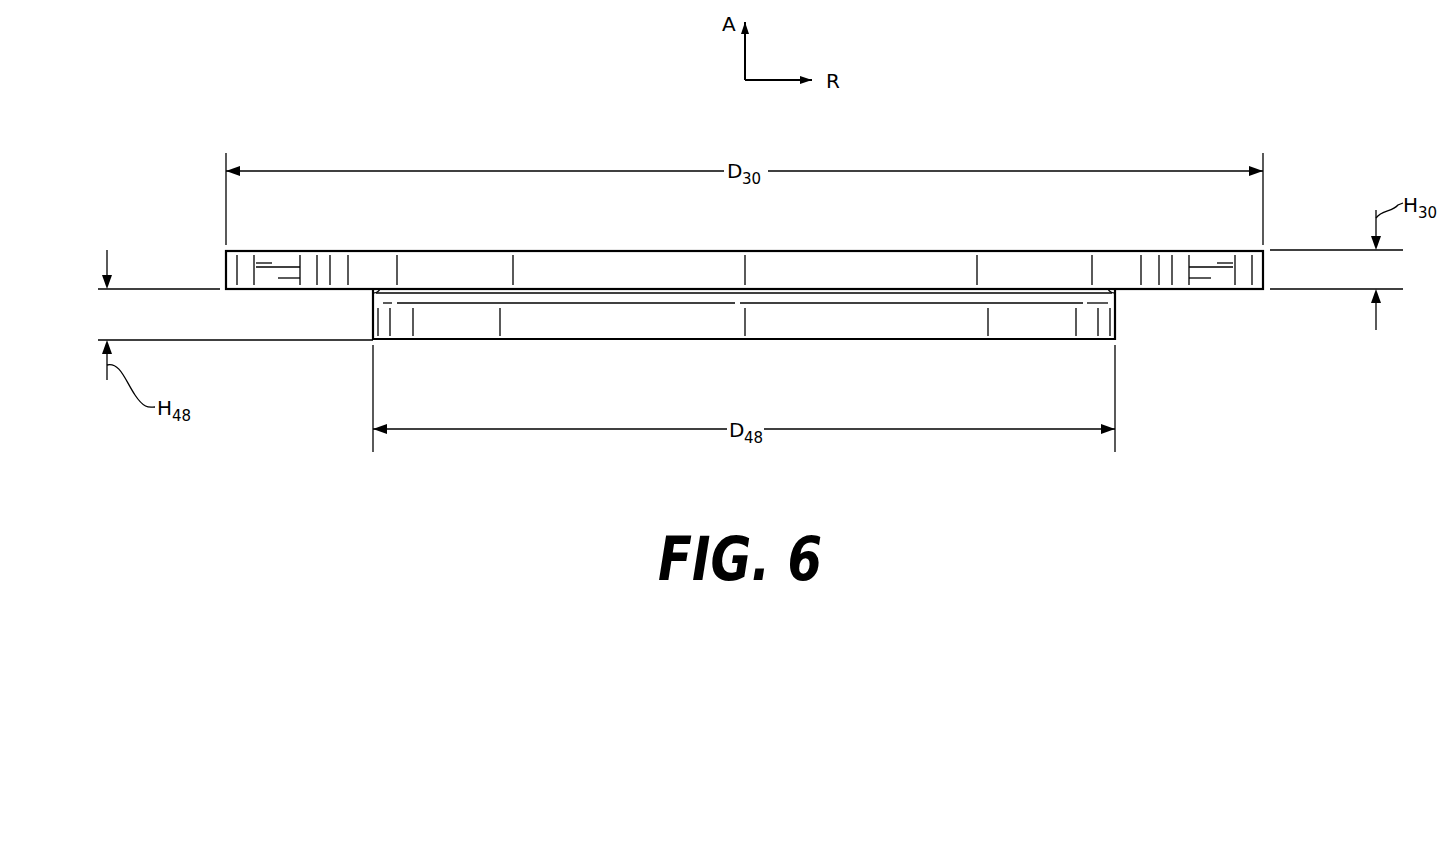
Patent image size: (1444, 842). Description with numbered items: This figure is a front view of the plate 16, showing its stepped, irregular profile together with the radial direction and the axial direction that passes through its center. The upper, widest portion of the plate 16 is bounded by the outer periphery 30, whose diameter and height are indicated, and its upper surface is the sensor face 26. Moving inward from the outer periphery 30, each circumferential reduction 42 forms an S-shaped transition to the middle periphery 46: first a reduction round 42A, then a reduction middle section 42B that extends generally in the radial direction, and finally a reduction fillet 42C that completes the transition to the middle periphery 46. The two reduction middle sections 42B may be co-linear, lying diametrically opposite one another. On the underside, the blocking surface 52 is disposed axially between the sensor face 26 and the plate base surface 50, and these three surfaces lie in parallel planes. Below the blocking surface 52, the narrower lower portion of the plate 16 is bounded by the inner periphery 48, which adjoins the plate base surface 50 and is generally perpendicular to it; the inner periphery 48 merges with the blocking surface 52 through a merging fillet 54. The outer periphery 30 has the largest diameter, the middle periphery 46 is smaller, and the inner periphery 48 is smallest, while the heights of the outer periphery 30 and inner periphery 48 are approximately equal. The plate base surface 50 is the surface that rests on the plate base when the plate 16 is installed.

The plate 16 is at (748, 342).
The sensor face 26 is at (472, 250).
The outer periphery 30 is at (748, 266).
The circumferential reduction 42 is at (753, 231).
The reduction round 42A is at (242, 250).
The reduction middle section 42B is at (282, 255).
The reduction fillet 42C is at (323, 268).
The middle periphery 46 is at (838, 268).
The inner periphery 48 is at (749, 349).
The plate base surface 50 is at (548, 340).
The blocking surface 52 is at (238, 292).
The merging fillet 54 is at (373, 291).